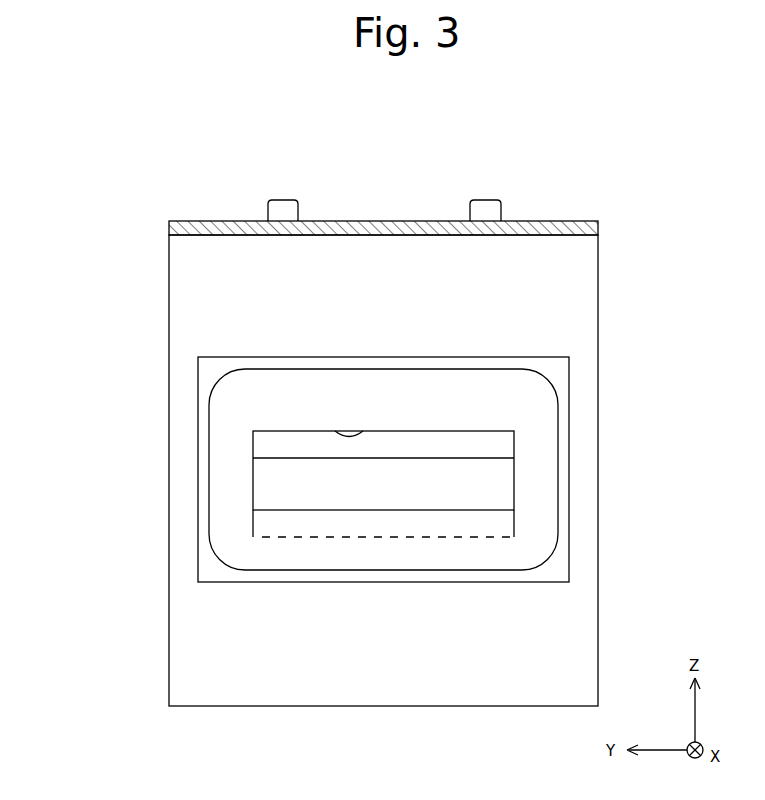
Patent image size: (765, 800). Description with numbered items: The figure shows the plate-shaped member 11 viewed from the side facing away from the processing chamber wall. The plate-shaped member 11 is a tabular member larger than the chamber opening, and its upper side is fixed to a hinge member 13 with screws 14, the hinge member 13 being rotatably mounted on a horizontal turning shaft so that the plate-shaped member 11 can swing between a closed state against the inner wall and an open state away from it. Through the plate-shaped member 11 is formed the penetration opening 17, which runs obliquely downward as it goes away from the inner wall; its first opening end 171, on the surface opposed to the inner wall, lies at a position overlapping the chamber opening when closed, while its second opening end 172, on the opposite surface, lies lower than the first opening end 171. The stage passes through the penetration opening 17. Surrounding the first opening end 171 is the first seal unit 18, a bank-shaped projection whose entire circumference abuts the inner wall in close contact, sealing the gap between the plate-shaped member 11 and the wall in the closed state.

The plate-shaped member 11 is at (99, 194).
The hinge member 13 is at (196, 220).
The screw 14 is at (296, 199).
The penetration opening 17 is at (498, 475).
The first seal unit 18 is at (572, 374).
The first opening end 171 is at (365, 434).
The second opening end 172 is at (388, 460).